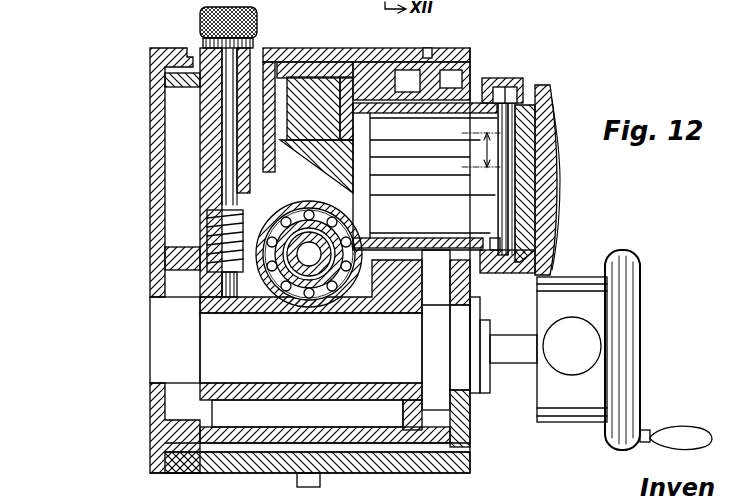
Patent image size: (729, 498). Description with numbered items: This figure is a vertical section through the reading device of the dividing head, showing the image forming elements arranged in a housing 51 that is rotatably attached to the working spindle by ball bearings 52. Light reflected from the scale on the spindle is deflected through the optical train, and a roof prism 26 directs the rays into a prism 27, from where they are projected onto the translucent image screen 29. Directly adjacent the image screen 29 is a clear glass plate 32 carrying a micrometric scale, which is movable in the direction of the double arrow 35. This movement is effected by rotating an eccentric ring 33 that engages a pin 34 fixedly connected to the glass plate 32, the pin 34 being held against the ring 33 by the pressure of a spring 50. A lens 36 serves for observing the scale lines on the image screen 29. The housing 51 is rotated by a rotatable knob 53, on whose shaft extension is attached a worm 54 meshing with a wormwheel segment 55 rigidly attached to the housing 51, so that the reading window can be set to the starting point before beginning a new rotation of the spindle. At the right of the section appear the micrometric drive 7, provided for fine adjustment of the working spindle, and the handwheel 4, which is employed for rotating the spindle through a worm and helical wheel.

The rotatable knob 53 is at (200, 18).
The housing 51 is at (267, 62).
The roof prism 26 is at (320, 80).
The prism 27 is at (302, 163).
The worm 54 is at (208, 226).
The wormwheel segment 55 is at (247, 280).
The ball bearings 52 is at (346, 228).
The clear glass plate 32 is at (500, 197).
The double arrow 35 is at (483, 159).
The pin 34 is at (511, 78).
The spring 50 is at (500, 86).
The eccentric ring 33 is at (528, 100).
The image screen 29 is at (560, 180).
The lens 36 is at (555, 146).
The micrometric drive 7 is at (556, 355).
The handwheel 4 is at (626, 381).